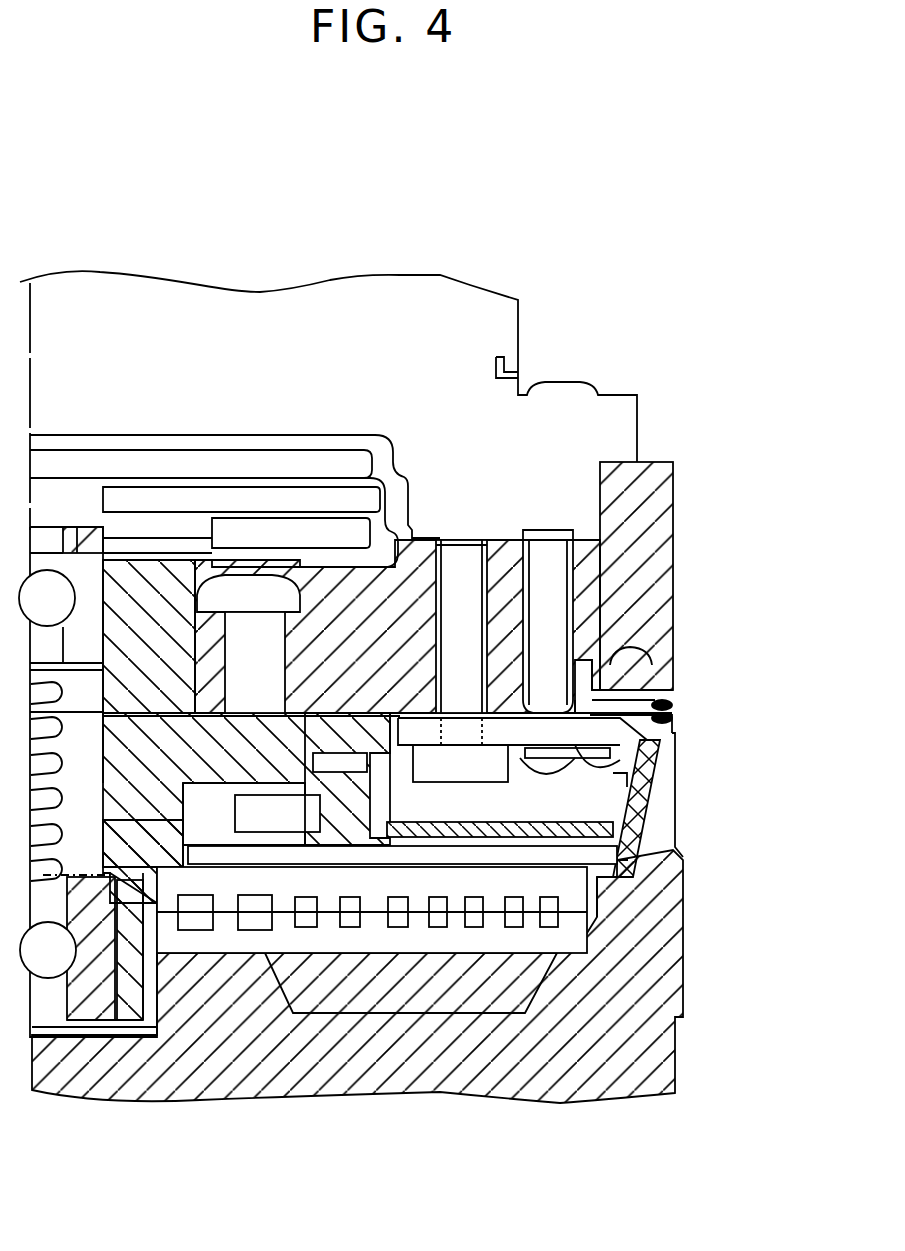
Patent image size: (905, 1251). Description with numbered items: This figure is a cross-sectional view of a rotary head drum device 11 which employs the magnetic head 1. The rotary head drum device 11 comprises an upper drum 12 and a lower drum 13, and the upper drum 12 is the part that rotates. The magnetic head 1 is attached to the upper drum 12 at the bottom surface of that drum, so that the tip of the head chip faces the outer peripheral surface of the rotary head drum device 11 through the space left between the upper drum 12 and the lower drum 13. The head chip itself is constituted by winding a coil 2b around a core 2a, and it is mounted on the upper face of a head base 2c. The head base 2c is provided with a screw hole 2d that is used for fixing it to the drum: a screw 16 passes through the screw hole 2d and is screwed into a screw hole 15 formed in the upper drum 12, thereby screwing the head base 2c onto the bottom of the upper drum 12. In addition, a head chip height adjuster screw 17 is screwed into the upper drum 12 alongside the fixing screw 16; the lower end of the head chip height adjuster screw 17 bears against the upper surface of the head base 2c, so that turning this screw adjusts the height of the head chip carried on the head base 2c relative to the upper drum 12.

The magnetic head 1 is at (590, 767).
The core 2a is at (668, 716).
The coil 2b is at (672, 704).
The head base 2c is at (577, 733).
The screw hole 2d is at (487, 728).
The rotary head drum device 11 is at (672, 399).
The upper drum 12 is at (676, 547).
The lower drum 13 is at (676, 945).
The screw hole 15 is at (414, 546).
The screw 16 is at (464, 552).
The head chip height adjuster screw 17 is at (550, 543).